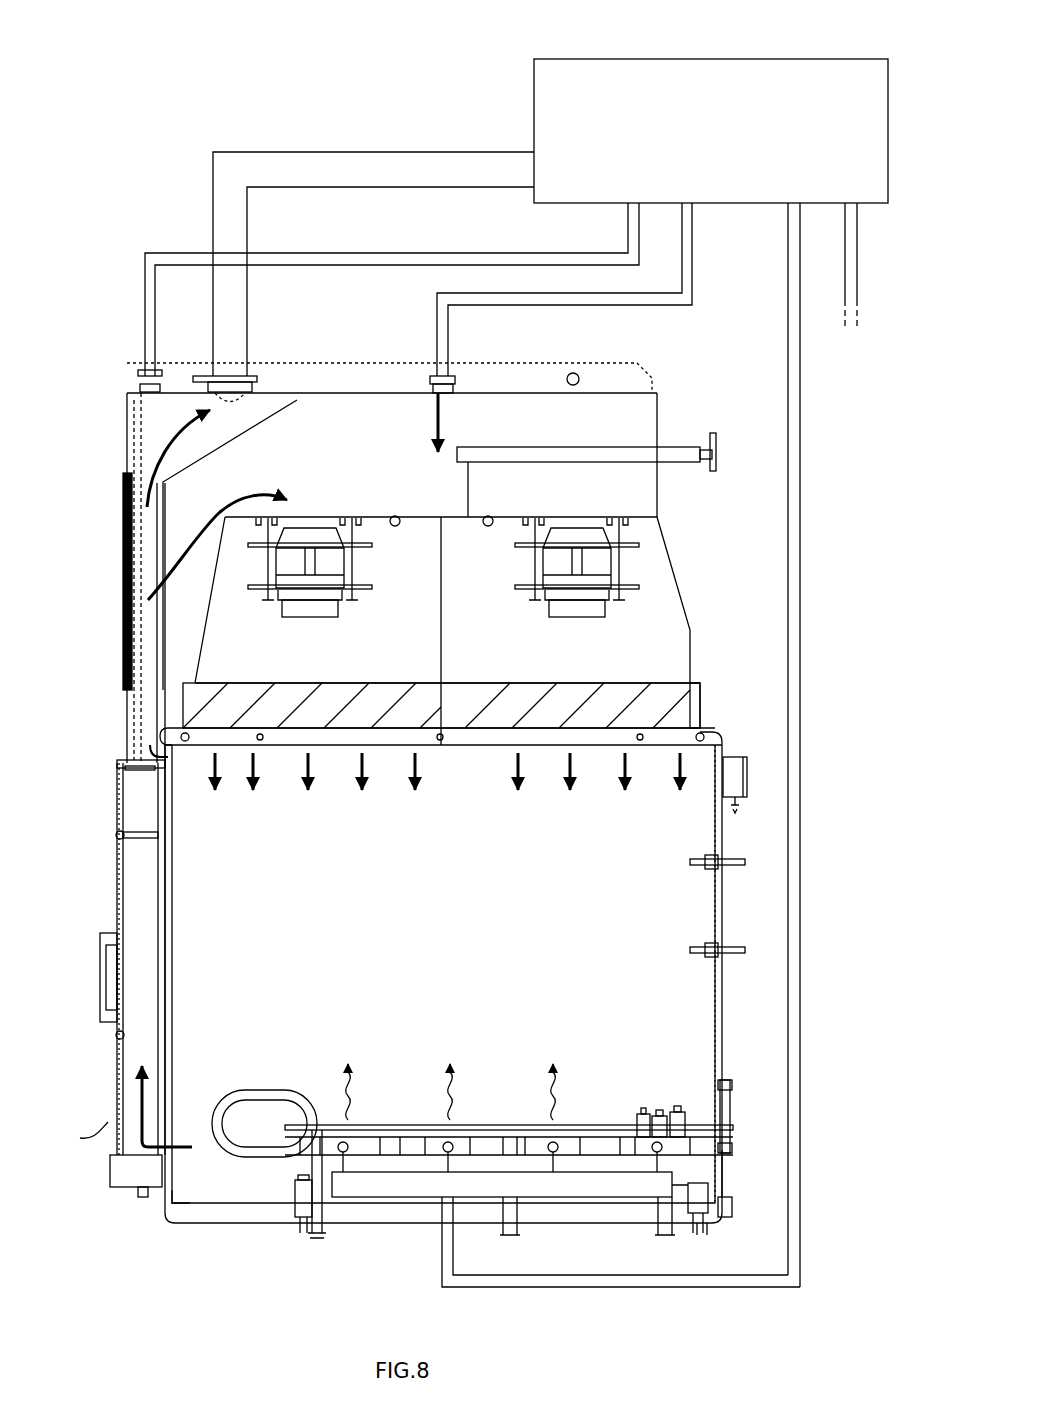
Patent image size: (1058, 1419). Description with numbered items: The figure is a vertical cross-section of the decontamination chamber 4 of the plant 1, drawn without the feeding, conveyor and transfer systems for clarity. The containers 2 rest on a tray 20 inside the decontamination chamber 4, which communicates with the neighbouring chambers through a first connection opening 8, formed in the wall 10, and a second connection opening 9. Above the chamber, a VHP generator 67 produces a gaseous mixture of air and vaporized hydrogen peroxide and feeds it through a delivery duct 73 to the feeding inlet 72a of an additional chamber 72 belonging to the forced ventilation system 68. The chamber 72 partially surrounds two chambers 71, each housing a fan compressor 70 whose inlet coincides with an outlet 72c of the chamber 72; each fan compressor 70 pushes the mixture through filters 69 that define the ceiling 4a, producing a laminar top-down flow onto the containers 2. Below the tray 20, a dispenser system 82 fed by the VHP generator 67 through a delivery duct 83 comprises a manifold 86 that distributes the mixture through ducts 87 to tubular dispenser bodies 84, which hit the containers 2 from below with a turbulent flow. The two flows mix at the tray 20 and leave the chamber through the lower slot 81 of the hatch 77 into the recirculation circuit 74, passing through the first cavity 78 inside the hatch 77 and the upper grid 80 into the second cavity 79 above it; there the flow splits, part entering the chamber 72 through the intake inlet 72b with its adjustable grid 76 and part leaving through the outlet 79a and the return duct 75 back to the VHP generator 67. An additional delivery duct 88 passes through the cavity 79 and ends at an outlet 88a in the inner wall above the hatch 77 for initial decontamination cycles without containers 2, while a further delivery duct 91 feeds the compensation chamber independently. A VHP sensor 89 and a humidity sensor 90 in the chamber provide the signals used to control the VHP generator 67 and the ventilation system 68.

The plant 1 is at (210, 102).
The containers 2 is at (672, 1105).
The decontamination chamber 4 is at (688, 1006).
The ceiling 4a is at (690, 755).
The first connection opening 8 is at (740, 1112).
The second connection opening 9 is at (240, 1113).
The wall 10 is at (726, 836).
The tray 20 is at (478, 1125).
The VHP generator 67 is at (699, 140).
The forced ventilation system 68 is at (706, 414).
The filters 69 is at (370, 692).
The fan compressor 70 is at (350, 600).
The chambers 71 is at (470, 447).
The additional chamber 72 is at (357, 394).
The feeding inlet 72a is at (490, 395).
The intake inlet 72b is at (168, 532).
The outlets 72c is at (325, 515).
The delivery duct 73 is at (692, 240).
The recirculation circuit 74 is at (140, 803).
The return duct 75 is at (326, 160).
The grid 76 is at (118, 586).
The hatch 77 is at (92, 888).
The first cavity 78 is at (125, 1044).
The second cavity 79 is at (125, 424).
The outlet 79a is at (252, 396).
The upper grid 80 is at (135, 752).
The lower slot 81 is at (190, 1170).
The dispenser system 82 is at (568, 1294).
The delivery duct 83 is at (706, 1279).
The dispenser bodies 84 is at (338, 1150).
The manifold 86 is at (350, 1187).
The ducts 87 is at (437, 1163).
The additional delivery duct 88 is at (333, 262).
The outlet 88a is at (178, 760).
The VHP sensor 89 is at (728, 868).
The humidity sensor 90 is at (728, 947).
The additional delivery duct 91 is at (854, 272).